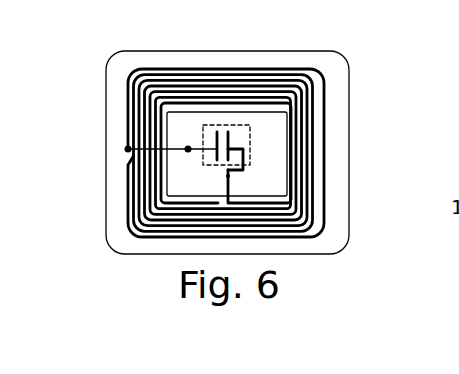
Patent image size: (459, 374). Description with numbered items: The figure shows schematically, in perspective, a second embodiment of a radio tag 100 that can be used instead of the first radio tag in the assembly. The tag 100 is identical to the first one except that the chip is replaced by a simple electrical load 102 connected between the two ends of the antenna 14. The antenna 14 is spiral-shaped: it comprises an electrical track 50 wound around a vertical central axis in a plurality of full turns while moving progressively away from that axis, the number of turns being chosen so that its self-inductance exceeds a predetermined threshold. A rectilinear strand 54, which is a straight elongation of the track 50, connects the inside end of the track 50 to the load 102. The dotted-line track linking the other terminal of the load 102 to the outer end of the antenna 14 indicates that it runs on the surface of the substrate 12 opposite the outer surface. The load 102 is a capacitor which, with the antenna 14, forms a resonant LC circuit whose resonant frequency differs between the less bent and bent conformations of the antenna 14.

The radio tag 100 is at (308, 51).
The substrate 12 is at (350, 148).
The antenna 14 is at (62, 171).
The electrical track 50 is at (133, 155).
The rectilinear strand 54 is at (226, 178).
The electrical load 102 is at (213, 127).